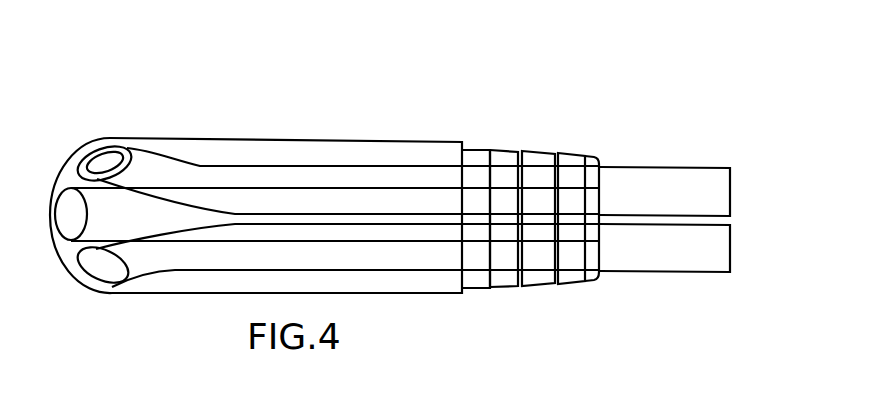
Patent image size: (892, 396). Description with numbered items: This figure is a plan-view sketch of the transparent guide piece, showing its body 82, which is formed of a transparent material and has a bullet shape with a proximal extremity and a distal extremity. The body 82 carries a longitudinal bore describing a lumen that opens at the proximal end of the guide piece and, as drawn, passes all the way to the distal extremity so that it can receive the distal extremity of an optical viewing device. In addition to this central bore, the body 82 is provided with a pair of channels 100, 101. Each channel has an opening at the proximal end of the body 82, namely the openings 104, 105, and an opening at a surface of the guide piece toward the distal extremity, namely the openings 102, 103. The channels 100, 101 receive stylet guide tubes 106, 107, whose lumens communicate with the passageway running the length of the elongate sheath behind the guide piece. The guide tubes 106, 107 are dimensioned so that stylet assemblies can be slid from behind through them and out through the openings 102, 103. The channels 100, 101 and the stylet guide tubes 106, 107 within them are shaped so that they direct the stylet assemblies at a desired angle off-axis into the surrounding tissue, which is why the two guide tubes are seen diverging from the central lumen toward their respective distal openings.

The body 82 is at (387, 140).
The channel 100 is at (160, 278).
The channel 101 is at (150, 155).
The opening 102 is at (90, 277).
The opening 103 is at (108, 143).
The opening 104 is at (600, 272).
The opening 105 is at (604, 166).
The stylet guide tube 106 is at (690, 273).
The stylet guide tube 107 is at (697, 168).